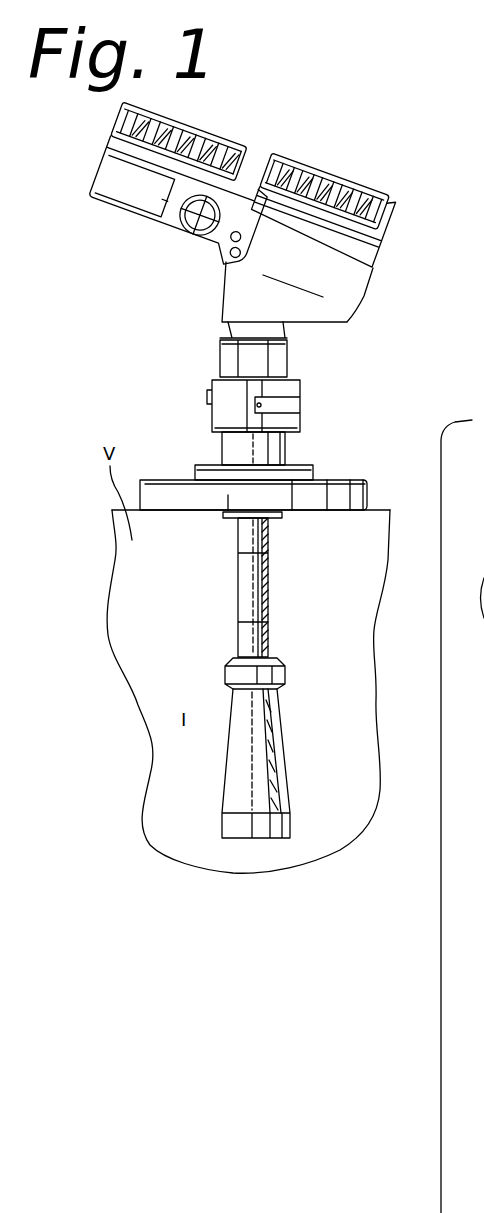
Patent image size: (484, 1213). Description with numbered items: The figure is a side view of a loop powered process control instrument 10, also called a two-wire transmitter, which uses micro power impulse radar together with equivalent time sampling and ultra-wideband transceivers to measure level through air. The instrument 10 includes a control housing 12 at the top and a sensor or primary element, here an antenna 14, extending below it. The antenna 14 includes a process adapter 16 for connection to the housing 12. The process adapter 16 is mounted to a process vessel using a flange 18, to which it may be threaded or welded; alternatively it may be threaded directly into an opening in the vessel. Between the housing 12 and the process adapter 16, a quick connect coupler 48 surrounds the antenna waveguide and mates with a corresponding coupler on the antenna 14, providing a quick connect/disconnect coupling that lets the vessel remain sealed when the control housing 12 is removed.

The process control instrument 10 is at (259, 224).
The control housing 12 is at (382, 290).
The antenna 14 is at (236, 600).
The process adapter 16 is at (293, 448).
The flange 18 is at (368, 499).
The quick connect coupler 48 is at (288, 358).